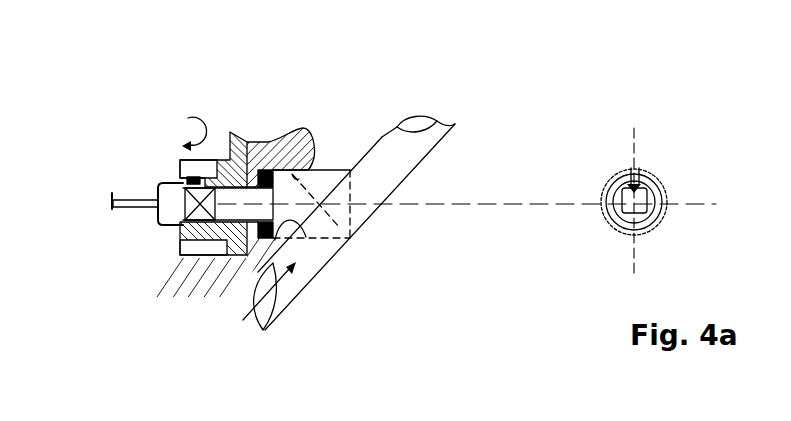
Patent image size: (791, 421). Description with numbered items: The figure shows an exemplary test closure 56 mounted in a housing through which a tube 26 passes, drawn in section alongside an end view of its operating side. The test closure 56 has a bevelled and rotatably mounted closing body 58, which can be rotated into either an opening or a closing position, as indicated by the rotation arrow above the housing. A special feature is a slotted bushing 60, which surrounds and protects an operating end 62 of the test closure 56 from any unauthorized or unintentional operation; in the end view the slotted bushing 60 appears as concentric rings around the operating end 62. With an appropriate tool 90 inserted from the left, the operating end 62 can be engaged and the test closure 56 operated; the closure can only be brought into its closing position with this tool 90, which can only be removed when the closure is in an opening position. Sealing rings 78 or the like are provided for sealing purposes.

The tube / shaft 26 is at (386, 146).
The test closure 56 is at (221, 88).
The closing body 58 is at (312, 135).
The slotted bushing 60 is at (182, 232).
The operating end 62 is at (172, 193).
The sealing rings 78 is at (306, 237).
The tool 90 is at (113, 208).